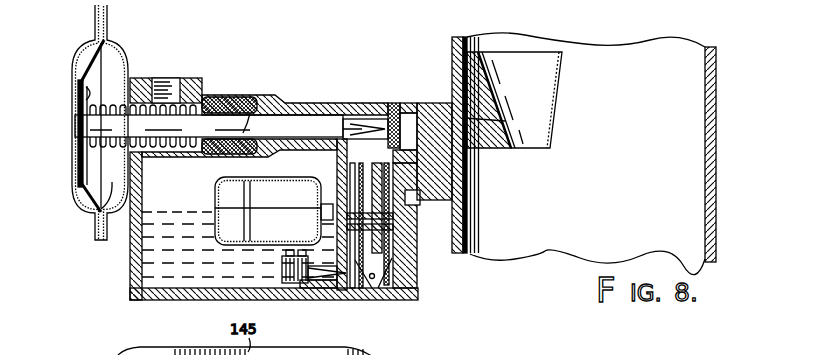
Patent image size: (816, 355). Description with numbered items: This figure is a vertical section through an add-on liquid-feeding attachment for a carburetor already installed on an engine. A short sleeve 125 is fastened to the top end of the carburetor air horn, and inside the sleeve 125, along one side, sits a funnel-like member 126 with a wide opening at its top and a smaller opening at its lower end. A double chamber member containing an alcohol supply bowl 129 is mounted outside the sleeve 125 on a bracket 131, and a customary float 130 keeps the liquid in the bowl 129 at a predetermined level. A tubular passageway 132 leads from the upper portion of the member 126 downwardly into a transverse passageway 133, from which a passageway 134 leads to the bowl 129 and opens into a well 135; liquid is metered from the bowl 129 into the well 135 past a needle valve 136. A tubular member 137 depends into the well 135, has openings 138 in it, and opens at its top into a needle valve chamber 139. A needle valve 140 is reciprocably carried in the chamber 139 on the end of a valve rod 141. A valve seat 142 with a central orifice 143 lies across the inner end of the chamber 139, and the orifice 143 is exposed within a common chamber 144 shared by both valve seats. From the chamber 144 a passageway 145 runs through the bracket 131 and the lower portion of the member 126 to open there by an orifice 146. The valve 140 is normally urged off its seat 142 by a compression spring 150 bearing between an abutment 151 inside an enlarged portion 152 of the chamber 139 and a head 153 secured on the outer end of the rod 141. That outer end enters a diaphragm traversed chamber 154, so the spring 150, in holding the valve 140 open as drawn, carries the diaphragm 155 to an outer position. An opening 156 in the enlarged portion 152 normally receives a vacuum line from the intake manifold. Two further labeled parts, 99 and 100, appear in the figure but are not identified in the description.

The valve spring seat 99 is at (401, 237).
The valve pin 100 is at (369, 279).
The sleeve 125 is at (685, 142).
The funnel-like member 126 is at (565, 75).
The alcohol supply bowl 129 is at (148, 274).
The float 130 is at (274, 190).
The bracket 131 is at (470, 207).
The tubular passageway 132 is at (482, 83).
The transverse passageway 133 is at (466, 183).
The passageway 134 is at (413, 205).
The well 135 is at (418, 289).
The needle valve 136 is at (313, 290).
The tubular member 137 is at (361, 289).
The openings 138 is at (418, 258).
The needle valve chamber 139 is at (367, 103).
The needle valve 140 is at (343, 128).
The valve rod 141 is at (262, 95).
The valve seat 142 is at (388, 115).
The central orifice 143 is at (412, 148).
The common chamber 144 is at (418, 109).
The passageway 145 is at (492, 150).
The orifice 146 is at (505, 126).
The compression spring 150 is at (155, 148).
The abutment 151 is at (212, 97).
The enlarged portion 152 is at (188, 148).
The head 153 is at (76, 95).
The diaphragm traversed chamber 154 is at (96, 216).
The diaphragm 155 is at (79, 186).
The opening 156 is at (173, 93).